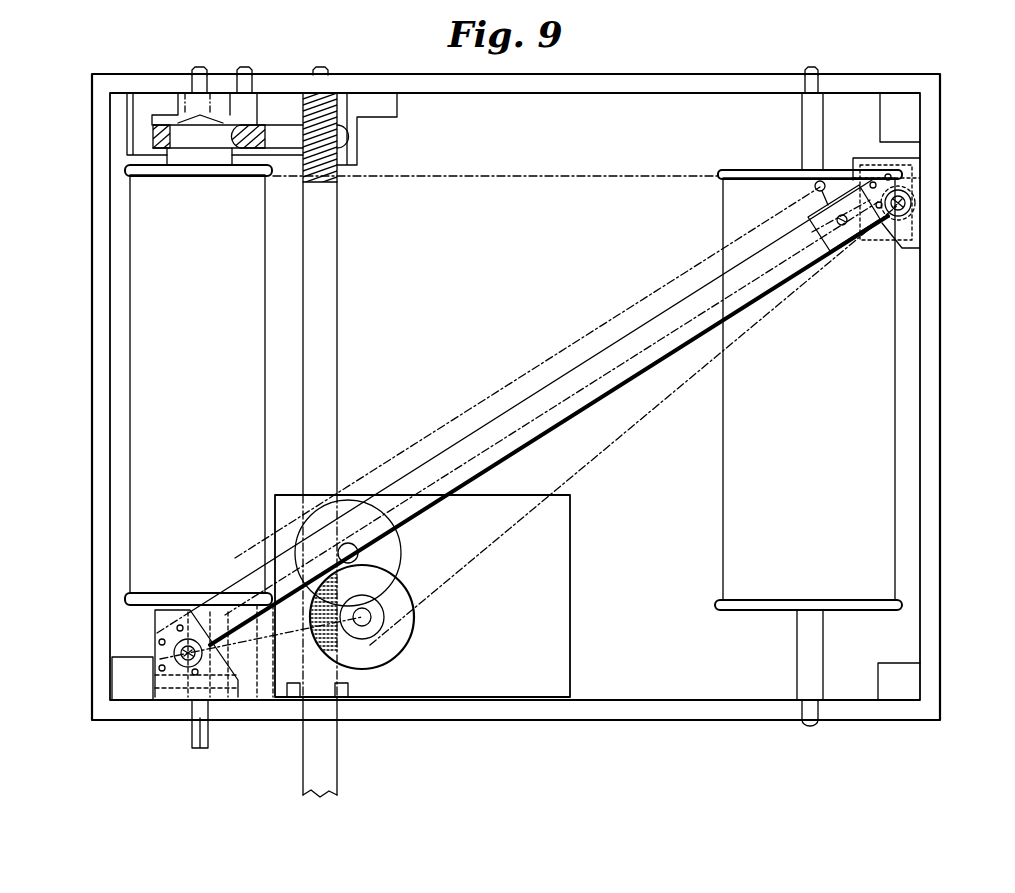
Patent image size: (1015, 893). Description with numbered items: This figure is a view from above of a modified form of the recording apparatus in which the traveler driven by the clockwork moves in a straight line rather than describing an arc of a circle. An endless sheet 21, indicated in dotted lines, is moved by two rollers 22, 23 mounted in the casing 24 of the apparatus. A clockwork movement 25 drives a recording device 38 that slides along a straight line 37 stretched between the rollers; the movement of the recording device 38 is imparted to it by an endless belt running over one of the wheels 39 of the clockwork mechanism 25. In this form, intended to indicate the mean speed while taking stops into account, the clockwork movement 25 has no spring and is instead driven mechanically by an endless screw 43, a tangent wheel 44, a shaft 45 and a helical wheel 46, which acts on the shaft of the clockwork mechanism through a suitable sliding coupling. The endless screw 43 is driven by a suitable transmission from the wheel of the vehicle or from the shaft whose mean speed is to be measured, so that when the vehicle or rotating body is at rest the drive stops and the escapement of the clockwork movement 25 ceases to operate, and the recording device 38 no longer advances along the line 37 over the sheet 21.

The endless sheet 21 is at (612, 183).
The roller 22 is at (885, 398).
The roller 23 is at (145, 298).
The casing 24 is at (896, 713).
The clockwork movement 25 is at (557, 655).
The straight line 37 is at (518, 440).
The recording device 38 is at (849, 232).
The wheel 39 is at (636, 428).
The endless screw 43 is at (247, 127).
The tangent wheel 44 is at (298, 120).
The shaft 45 is at (322, 281).
The helical wheel 46 is at (405, 625).